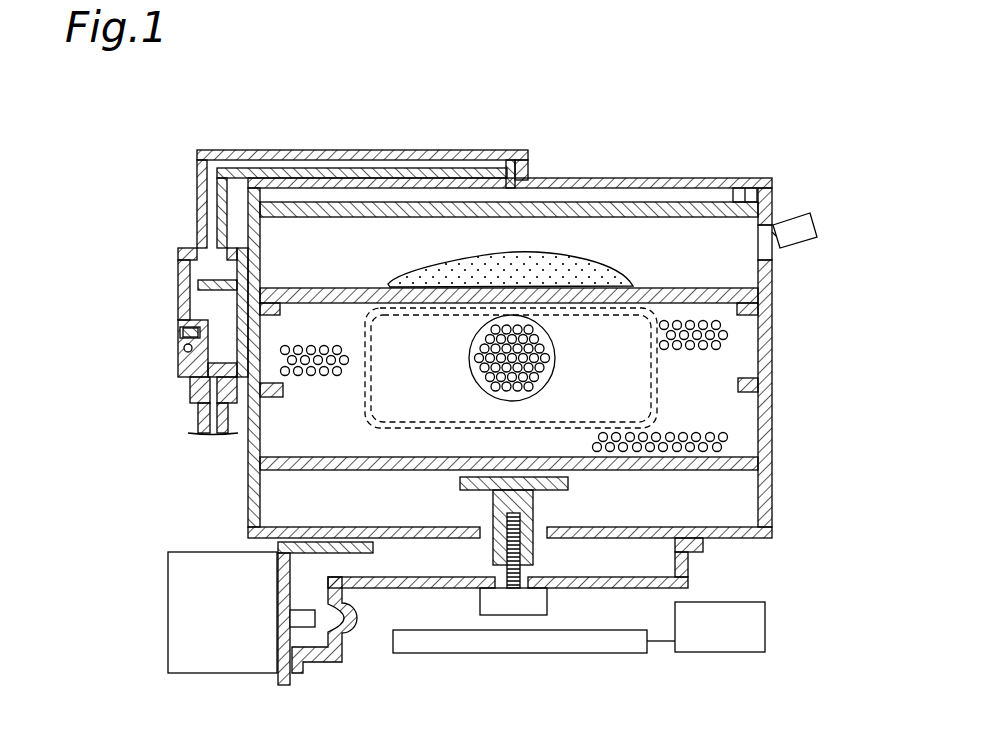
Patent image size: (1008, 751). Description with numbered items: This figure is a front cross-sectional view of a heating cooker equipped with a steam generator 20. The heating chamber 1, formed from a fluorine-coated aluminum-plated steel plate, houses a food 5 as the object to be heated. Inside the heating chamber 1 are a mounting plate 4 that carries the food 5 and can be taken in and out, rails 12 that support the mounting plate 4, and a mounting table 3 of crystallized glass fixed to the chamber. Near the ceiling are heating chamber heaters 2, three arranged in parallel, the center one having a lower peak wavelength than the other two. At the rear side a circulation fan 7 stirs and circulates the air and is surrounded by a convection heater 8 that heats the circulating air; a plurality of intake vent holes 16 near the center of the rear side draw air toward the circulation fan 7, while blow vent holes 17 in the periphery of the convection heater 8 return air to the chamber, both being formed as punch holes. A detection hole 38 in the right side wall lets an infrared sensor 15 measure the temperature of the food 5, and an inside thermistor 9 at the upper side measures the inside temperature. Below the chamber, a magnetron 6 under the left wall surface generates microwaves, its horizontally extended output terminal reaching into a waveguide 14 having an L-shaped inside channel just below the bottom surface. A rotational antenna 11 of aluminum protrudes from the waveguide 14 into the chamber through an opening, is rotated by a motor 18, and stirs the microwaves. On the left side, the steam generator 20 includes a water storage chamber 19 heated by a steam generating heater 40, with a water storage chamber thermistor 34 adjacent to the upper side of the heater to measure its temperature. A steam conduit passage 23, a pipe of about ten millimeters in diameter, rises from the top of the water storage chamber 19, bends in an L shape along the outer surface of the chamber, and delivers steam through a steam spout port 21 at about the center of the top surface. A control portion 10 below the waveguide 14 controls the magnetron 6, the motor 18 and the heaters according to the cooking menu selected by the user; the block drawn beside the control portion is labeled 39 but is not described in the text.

The heating chamber 1 is at (288, 247).
The heating chamber heater 2 is at (350, 208).
The mounting table 3 is at (727, 470).
The mounting plate 4 is at (645, 292).
The food 5 is at (502, 265).
The magnetron 6 is at (218, 645).
The circulation fan 7 is at (470, 246).
The convection heater 8 is at (655, 380).
The inside thermistor 9 is at (740, 190).
The control portion 10 is at (582, 653).
The rotational antenna 11 is at (568, 483).
The rail 12 is at (775, 305).
The waveguide 14 is at (375, 590).
The infrared sensor 15 is at (803, 227).
The intake vent holes 16 is at (478, 330).
The blow vent holes 17 is at (725, 437).
The motor 18 is at (525, 602).
The water storage chamber 19 is at (200, 305).
The steam generator 20 is at (162, 319).
The steam spout port 21 is at (510, 150).
The steam conduit passage 23 is at (258, 163).
The water storage chamber thermistor 34 is at (180, 333).
The detection hole 38 is at (772, 228).
The controller 39 is at (713, 652).
The steam generating heater 40 is at (177, 350).